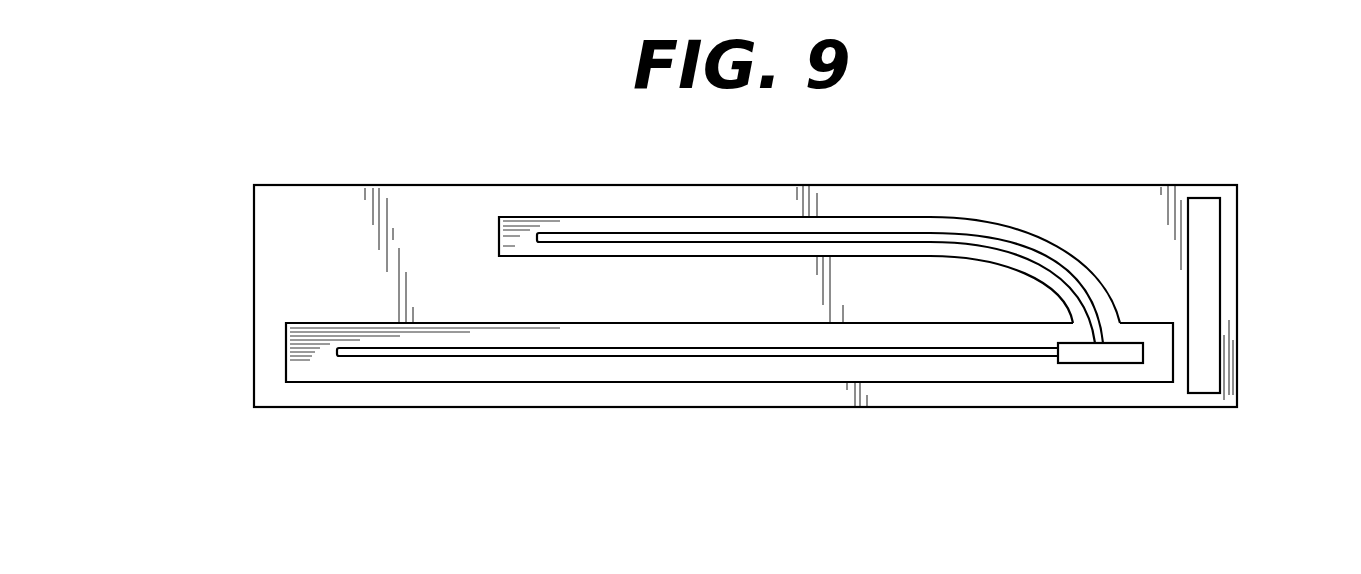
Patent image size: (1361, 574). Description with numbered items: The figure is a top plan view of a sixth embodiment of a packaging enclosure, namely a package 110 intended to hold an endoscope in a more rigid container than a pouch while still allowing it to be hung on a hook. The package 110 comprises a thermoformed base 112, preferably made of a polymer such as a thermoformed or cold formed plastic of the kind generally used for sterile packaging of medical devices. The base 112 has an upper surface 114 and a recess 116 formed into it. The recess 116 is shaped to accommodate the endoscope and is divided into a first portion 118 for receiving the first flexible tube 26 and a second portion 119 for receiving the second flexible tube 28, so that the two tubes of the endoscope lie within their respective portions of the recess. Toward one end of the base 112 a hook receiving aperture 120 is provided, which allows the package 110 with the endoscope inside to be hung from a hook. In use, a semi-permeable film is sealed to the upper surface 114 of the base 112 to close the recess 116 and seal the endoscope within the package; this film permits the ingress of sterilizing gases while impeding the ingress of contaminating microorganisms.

The package 110 is at (917, 424).
The thermoformed base 112 is at (358, 408).
The upper surface 114 is at (283, 302).
The recess 116 is at (1120, 373).
The first portion 118 is at (486, 369).
The second portion 119 is at (840, 223).
The hook receiving aperture 120 is at (1216, 315).
The first flexible tube 26 is at (660, 357).
The second flexible tube 28 is at (959, 231).